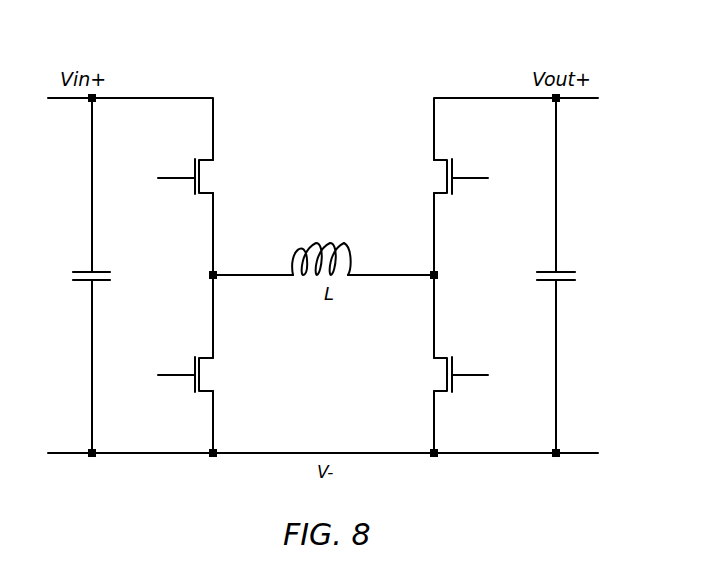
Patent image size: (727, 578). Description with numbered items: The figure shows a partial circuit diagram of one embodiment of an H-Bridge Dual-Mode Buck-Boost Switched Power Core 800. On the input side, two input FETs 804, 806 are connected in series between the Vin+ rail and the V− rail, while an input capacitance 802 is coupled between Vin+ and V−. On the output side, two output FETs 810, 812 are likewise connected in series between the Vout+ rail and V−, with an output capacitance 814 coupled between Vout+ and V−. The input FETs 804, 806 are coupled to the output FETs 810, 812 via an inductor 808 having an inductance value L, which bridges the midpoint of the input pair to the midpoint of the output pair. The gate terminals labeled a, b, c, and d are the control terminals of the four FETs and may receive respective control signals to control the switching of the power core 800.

The H-Bridge Dual-Mode Buck-Boost Switched Power Core 800 is at (509, 39).
The input capacitance 802 is at (78, 268).
The input FET 804 is at (199, 197).
The input FET 806 is at (199, 355).
The inductor 808 is at (315, 243).
The output FET 810 is at (447, 197).
The output FET 812 is at (447, 355).
The output capacitance 814 is at (566, 268).